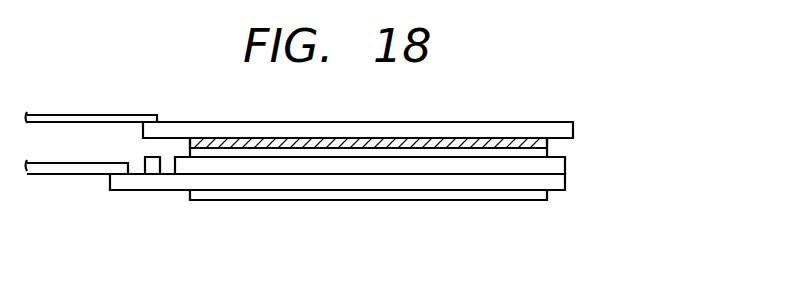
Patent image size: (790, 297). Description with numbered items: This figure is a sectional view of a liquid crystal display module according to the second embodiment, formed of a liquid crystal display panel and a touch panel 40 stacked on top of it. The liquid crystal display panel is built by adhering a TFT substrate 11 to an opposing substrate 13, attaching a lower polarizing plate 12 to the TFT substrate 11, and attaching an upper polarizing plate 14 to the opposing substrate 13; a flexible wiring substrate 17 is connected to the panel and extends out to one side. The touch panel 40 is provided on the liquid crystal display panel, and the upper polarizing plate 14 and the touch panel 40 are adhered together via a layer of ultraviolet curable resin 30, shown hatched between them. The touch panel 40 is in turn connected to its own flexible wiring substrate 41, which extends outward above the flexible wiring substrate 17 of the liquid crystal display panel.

The flexible wiring substrate for the touch panel 41 is at (73, 114).
The touch panel 40 is at (573, 127).
The ultraviolet curable resin 30 is at (505, 143).
The upper polarizing plate 14 is at (547, 152).
The opposing substrate 13 is at (565, 168).
The TFT substrate 11 is at (565, 185).
The lower polarizing plate 12 is at (517, 201).
The flexible wiring substrate 17 is at (60, 175).